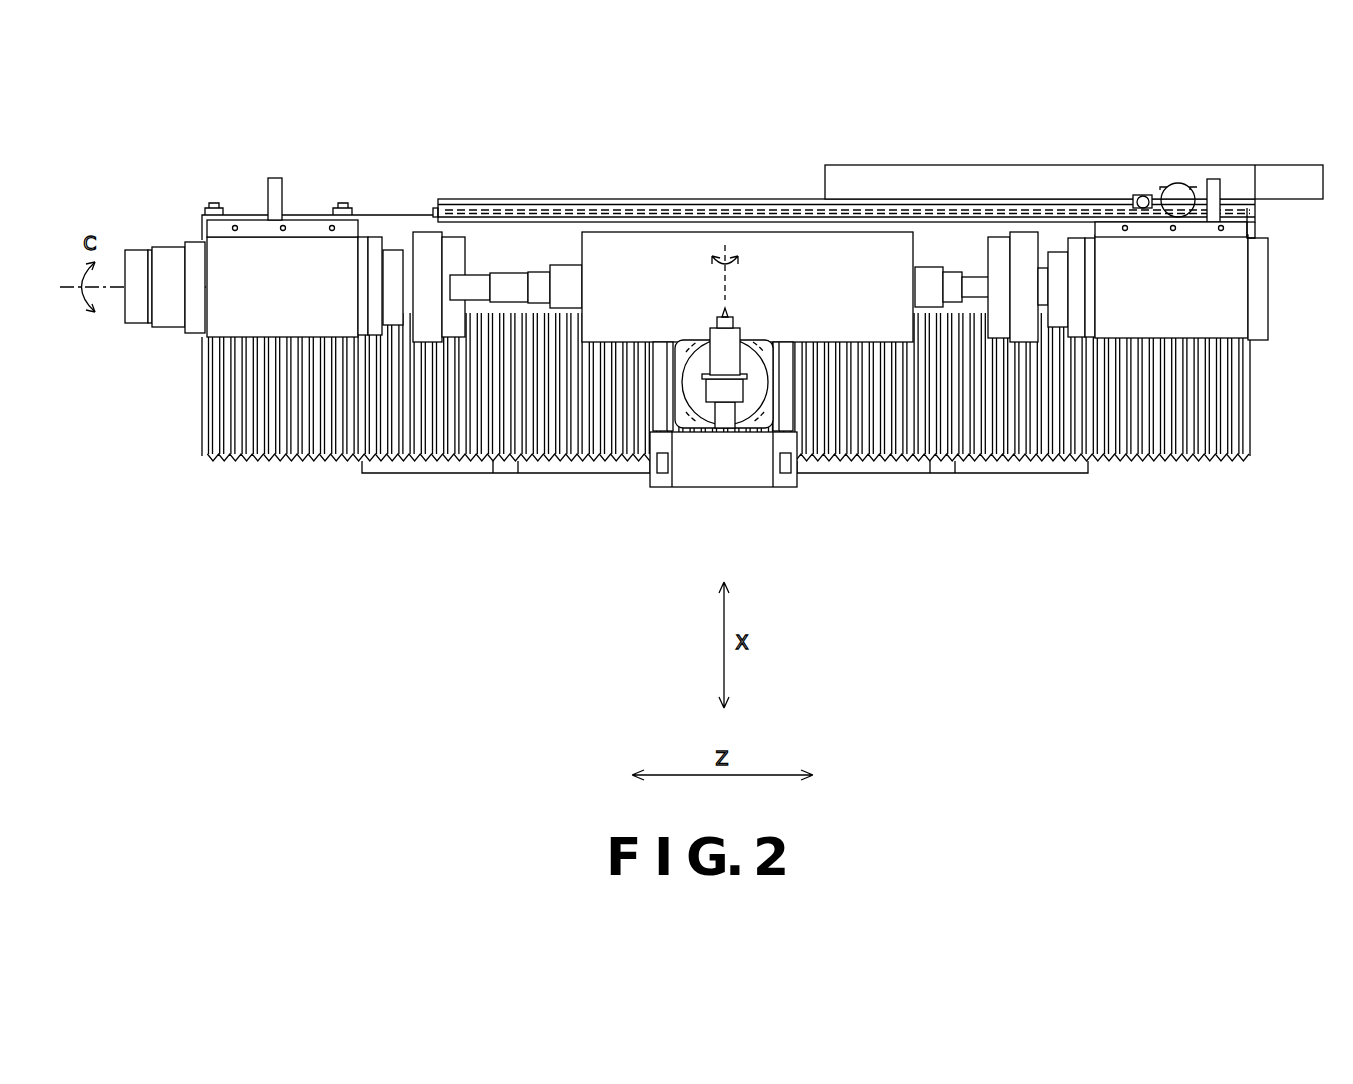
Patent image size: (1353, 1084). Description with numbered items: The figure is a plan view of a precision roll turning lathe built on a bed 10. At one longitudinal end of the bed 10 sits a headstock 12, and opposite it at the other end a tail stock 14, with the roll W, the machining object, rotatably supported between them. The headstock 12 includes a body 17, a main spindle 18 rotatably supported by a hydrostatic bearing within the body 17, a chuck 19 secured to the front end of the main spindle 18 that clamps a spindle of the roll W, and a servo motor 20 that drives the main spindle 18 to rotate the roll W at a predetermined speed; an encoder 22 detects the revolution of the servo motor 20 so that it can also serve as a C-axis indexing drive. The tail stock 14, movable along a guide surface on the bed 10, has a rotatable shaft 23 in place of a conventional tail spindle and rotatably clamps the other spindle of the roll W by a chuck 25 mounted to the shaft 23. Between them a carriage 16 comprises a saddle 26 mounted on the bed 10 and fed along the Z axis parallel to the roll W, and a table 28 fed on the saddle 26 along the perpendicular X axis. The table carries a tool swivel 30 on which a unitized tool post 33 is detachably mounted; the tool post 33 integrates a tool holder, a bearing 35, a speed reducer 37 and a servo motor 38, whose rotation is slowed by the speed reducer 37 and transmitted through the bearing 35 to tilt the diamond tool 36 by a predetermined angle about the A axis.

The bed 10 is at (203, 440).
The headstock 12 is at (297, 242).
The tail stock 14 is at (1152, 263).
The carriage 16 is at (731, 407).
The body 17 is at (250, 245).
The main spindle 18 is at (392, 256).
The chuck 19 is at (424, 243).
The servo motor 20 is at (173, 313).
The encoder 22 is at (138, 268).
The rotatable shaft 23 is at (1058, 262).
The chuck 25 is at (1025, 257).
The saddle 26 is at (770, 480).
The table 28 is at (692, 425).
The tool swivel 30 is at (714, 448).
The tool post 33 is at (760, 360).
The bearing 35 is at (717, 353).
The diamond tool 36 is at (720, 307).
The speed reducer 37 is at (732, 383).
The servo motor 38 is at (725, 422).
The roll W is at (662, 250).